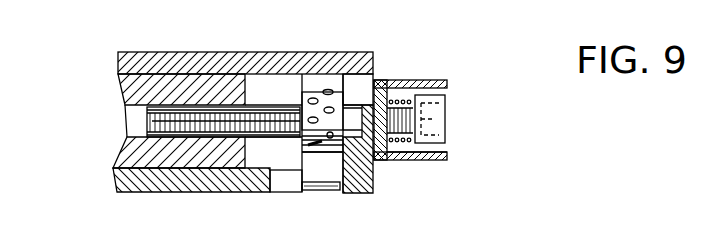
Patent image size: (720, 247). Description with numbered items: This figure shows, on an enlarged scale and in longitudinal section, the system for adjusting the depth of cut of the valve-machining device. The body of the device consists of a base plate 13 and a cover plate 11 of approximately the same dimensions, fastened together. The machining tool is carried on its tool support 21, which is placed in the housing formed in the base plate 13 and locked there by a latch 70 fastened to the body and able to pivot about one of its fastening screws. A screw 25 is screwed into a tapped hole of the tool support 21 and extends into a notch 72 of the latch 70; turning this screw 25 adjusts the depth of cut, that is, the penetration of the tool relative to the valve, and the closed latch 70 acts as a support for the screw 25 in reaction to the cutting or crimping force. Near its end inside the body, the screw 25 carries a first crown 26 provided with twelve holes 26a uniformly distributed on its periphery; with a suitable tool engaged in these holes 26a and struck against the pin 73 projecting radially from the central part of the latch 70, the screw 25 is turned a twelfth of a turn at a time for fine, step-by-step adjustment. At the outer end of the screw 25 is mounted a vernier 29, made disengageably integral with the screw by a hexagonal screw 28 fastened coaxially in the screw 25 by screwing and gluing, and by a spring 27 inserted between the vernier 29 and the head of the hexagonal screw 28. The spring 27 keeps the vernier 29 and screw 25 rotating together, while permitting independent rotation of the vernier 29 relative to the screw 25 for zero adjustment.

The cover plate 11 is at (225, 67).
The base plate 13 is at (195, 182).
The tool support 21 is at (147, 152).
The screw 25 is at (150, 122).
The first crown 26 is at (302, 95).
The holes 26a is at (327, 136).
The spring 27 is at (407, 153).
The hexagonal screw 28 is at (432, 122).
The vernier 29 is at (420, 80).
The latch 70 is at (360, 172).
The notch 72 is at (358, 84).
The pin 73 is at (325, 190).